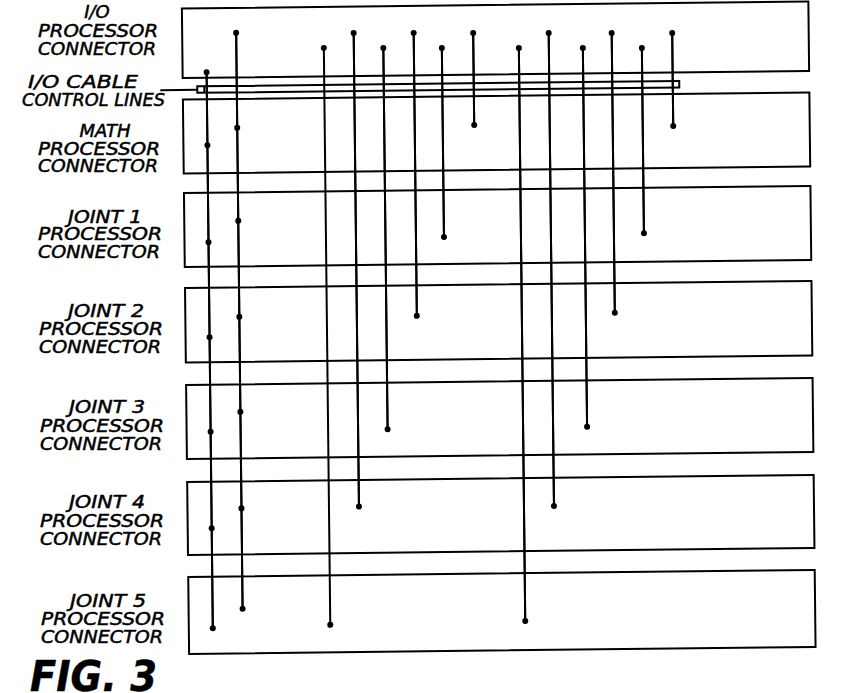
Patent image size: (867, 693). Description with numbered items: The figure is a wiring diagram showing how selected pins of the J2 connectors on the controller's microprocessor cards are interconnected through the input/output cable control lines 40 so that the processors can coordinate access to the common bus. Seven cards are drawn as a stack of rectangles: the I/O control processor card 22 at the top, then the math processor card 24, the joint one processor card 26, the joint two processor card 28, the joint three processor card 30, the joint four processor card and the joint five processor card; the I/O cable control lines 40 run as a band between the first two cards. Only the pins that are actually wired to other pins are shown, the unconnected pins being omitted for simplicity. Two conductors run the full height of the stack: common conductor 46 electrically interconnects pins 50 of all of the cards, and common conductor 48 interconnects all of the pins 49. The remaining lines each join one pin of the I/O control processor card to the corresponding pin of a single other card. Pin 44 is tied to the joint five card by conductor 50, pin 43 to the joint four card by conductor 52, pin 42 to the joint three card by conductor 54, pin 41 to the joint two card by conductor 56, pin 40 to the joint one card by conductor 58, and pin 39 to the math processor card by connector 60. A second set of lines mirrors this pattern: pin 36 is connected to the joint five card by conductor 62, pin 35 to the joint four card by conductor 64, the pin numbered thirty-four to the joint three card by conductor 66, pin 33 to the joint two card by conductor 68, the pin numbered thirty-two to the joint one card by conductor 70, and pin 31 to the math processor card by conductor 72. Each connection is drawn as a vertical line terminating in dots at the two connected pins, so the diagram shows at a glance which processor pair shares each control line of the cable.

The I/O control processor card 22 is at (775, 56).
The math processor card 24 is at (788, 146).
The joint 1 processor card 26 is at (766, 241).
The joint 2 processor card 28 is at (778, 326).
The joint 3 processor card 30 is at (767, 431).
The pin 31 is at (672, 70).
The pin 33 is at (613, 164).
The pin 35 is at (551, 260).
The pin 36 is at (522, 346).
The pin 39 is at (473, 70).
The input/output cable control lines 40 is at (275, 92).
The pin 41 is at (415, 165).
The pin 42 is at (386, 249).
The pin 43 is at (356, 261).
The pin 44 is at (327, 348).
The pin 49 is at (239, 312).
The pin 50 is at (366, 597).
The common conductor 46 is at (210, 607).
The common conductor 48 is at (240, 247).
The conductor 52 is at (357, 465).
The conductor 54 is at (386, 370).
The conductor 56 is at (417, 272).
The conductor 58 is at (445, 208).
The connector 60 is at (480, 100).
The conductor 62 is at (522, 560).
The conductor 64 is at (552, 463).
The conductor 66 is at (586, 407).
The conductor 68 is at (615, 268).
The conductor 70 is at (645, 179).
The conductor 72 is at (676, 100).